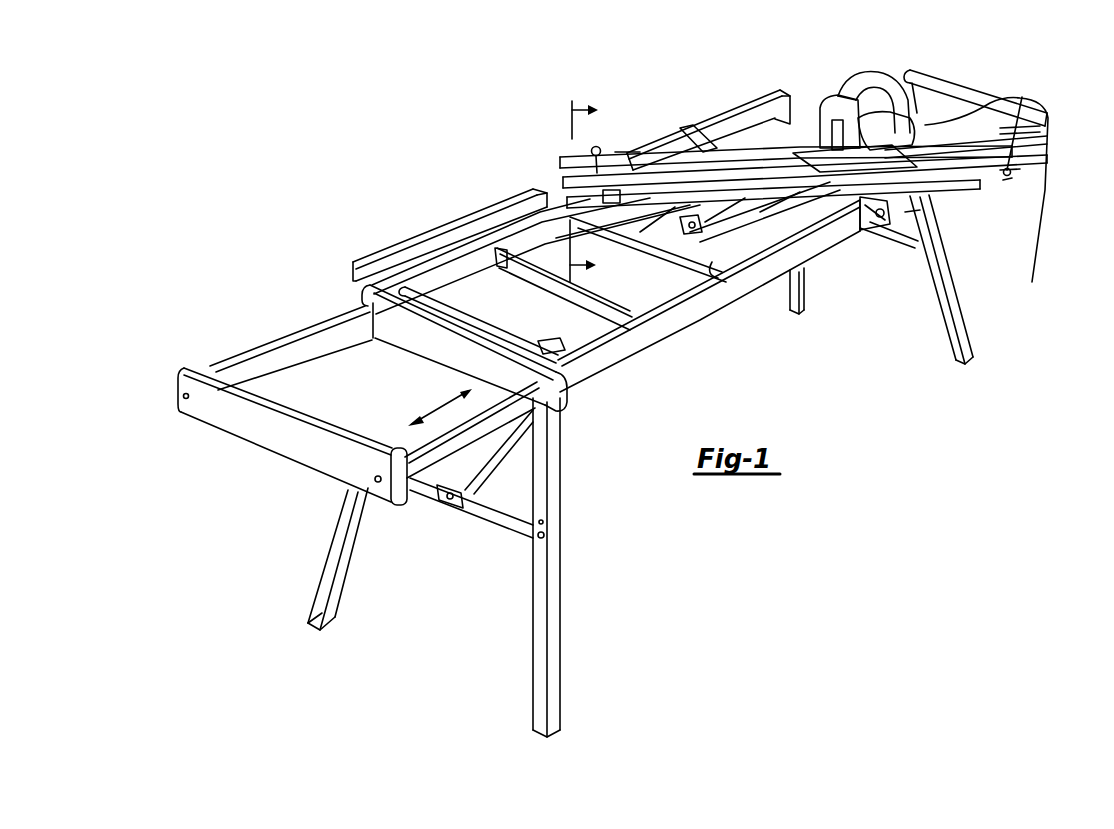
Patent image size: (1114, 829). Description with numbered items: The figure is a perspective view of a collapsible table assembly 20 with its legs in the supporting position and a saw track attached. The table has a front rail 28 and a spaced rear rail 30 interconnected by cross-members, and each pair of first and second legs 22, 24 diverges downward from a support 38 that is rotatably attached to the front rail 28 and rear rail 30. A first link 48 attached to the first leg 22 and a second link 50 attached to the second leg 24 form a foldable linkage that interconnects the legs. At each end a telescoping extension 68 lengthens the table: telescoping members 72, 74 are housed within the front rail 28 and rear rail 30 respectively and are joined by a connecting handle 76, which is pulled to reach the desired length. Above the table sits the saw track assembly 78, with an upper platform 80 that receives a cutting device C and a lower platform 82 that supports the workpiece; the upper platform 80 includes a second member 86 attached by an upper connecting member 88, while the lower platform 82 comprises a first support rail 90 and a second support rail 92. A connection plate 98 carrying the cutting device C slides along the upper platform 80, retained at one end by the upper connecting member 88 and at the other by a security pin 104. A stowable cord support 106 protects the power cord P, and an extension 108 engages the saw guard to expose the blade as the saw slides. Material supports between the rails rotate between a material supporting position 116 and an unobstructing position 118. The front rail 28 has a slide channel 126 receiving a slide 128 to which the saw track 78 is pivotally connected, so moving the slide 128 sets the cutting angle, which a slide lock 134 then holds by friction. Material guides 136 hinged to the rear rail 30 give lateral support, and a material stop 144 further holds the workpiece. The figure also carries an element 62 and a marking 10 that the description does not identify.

The collapsible table assembly 20 is at (290, 166).
The first leg 22 is at (543, 642).
The second leg 24 is at (330, 555).
The front rail 28 is at (595, 346).
The rear rail 30 is at (457, 262).
The support 38 is at (493, 325).
The first link 48 is at (490, 518).
The second link 50 is at (418, 502).
The diagonal brace 62 is at (512, 447).
The telescoping extension 68 is at (611, 298).
The telescoping member 72 is at (463, 433).
The telescoping member 74 is at (276, 362).
The connecting handle 76 is at (282, 440).
The saw track assembly 78 is at (627, 152).
The upper platform 80 is at (992, 186).
The lower platform 82 is at (941, 200).
The second member 86 is at (986, 165).
The upper connecting member 88 is at (1047, 170).
The first support rail 90 is at (565, 180).
The second support rail 92 is at (563, 198).
The connection plate 98 is at (799, 155).
The security pin 104 is at (591, 151).
The stowable cord support 106 is at (1041, 129).
The extension 108 is at (921, 130).
The material supporting position 116 is at (600, 280).
The unobstructing position 118 is at (727, 265).
The slide channel 126 is at (664, 325).
The slide 128 is at (912, 215).
The slide lock 134 is at (885, 235).
The material guide 136 is at (420, 255).
The material stop 144 is at (703, 140).
The cutting device C is at (832, 96).
The electrical power cord P is at (1038, 232).
The section line 10- 10 is at (600, 189).